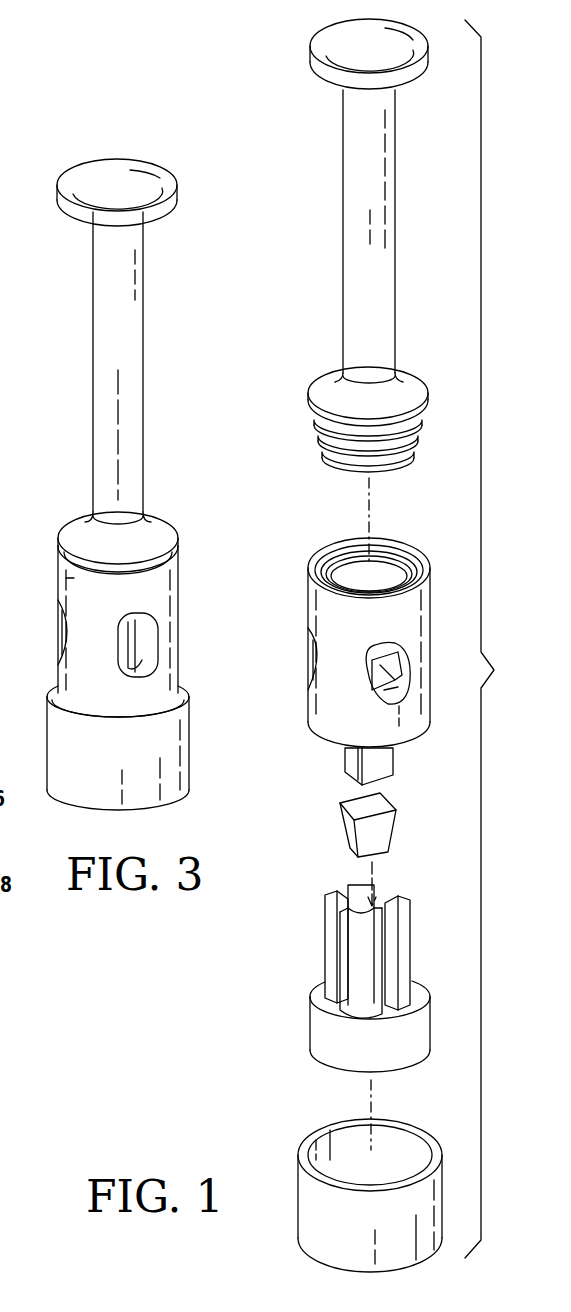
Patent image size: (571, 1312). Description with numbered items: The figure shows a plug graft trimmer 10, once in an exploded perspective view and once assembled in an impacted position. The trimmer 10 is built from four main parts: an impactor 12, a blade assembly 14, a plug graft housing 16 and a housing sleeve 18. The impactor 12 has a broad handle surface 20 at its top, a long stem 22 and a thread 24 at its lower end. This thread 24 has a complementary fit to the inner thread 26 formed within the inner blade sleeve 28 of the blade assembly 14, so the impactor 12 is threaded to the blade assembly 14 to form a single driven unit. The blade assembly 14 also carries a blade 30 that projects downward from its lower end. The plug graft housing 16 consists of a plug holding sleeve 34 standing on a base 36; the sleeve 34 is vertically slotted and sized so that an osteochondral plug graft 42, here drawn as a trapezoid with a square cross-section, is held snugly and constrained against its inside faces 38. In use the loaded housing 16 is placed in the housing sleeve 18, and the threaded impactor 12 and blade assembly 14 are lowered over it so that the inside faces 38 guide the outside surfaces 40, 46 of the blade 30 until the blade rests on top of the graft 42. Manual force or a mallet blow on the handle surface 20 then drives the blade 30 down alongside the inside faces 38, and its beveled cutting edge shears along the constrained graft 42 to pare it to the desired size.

In FIG. 3, the plug graft trimmer 10 is at (170, 430).
In FIG. 1, the plug graft trimmer 10 is at (492, 639).
In FIG. 3, the impactor 12 is at (120, 313).
In FIG. 1, the impactor 12 is at (353, 196).
In FIG. 3, the blade assembly 14 is at (178, 603).
In FIG. 1, the blade assembly 14 is at (369, 616).
In FIG. 1, the plug graft housing 16 is at (361, 964).
In FIG. 3, the housing sleeve 18 is at (190, 730).
In FIG. 1, the housing sleeve 18 is at (300, 1180).
In FIG. 3, the handle surface 20 is at (150, 182).
In FIG. 1, the handle surface 20 is at (335, 47).
In FIG. 3, the stem 22 is at (92, 336).
In FIG. 1, the stem 22 is at (350, 205).
In FIG. 1, the thread 24 is at (313, 440).
In FIG. 1, the inner thread 26 is at (332, 558).
In FIG. 3, the inner blade sleeve 28 is at (66, 578).
In FIG. 1, the inner blade sleeve 28 is at (316, 592).
In FIG. 1, the blade 30 is at (367, 769).
In FIG. 1, the plug holding sleeve 34 is at (356, 937).
In FIG. 1, the base 36 is at (316, 1027).
In FIG. 1, the inside faces 38 is at (382, 900).
In FIG. 1, the outside surface 40 is at (345, 760).
In FIG. 1, the osteochondral plug graft 42 is at (380, 800).
In FIG. 1, the outside surface 46 is at (385, 762).